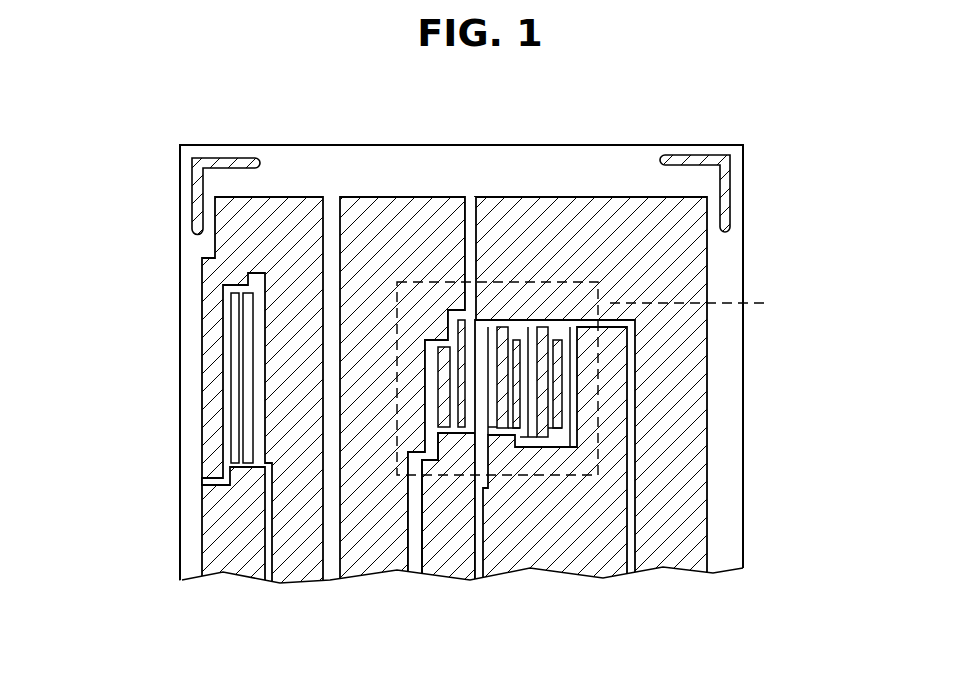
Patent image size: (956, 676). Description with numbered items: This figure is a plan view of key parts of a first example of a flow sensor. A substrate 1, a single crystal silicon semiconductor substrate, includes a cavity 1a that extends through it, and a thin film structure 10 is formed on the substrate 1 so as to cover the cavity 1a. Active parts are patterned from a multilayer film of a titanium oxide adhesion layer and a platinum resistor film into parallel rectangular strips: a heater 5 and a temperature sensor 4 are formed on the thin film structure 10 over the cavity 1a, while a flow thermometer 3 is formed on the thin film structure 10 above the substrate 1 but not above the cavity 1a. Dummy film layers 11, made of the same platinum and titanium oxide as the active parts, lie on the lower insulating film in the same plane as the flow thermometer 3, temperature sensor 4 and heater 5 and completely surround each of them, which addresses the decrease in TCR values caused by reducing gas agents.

The substrate 1 is at (744, 193).
The cavity 1a is at (706, 302).
The flow thermometer 3 is at (232, 345).
The temperature sensor 4 is at (435, 383).
The heater 5 is at (565, 398).
The thin film structure 10 is at (577, 294).
The dummy film layers 11 is at (441, 347).